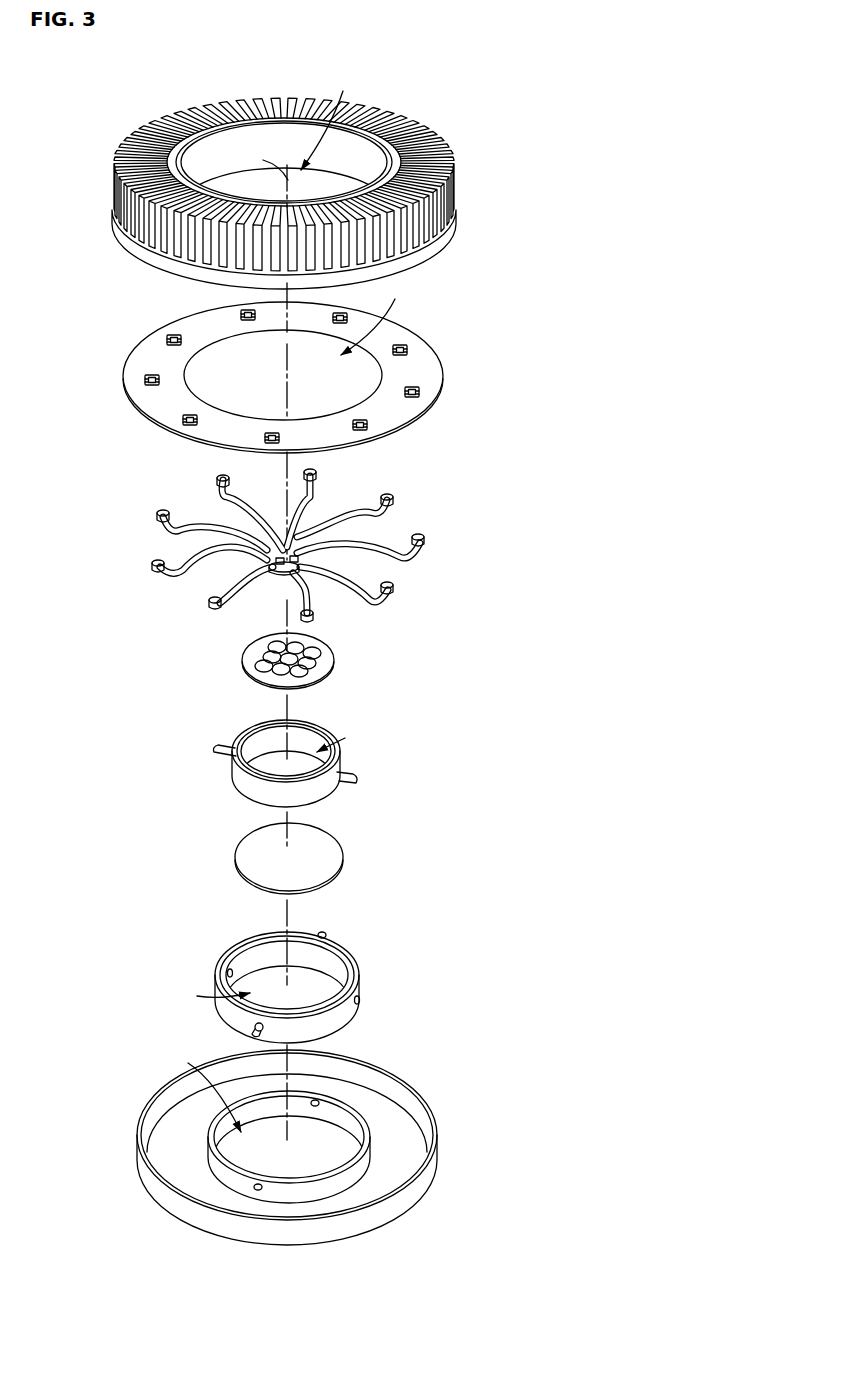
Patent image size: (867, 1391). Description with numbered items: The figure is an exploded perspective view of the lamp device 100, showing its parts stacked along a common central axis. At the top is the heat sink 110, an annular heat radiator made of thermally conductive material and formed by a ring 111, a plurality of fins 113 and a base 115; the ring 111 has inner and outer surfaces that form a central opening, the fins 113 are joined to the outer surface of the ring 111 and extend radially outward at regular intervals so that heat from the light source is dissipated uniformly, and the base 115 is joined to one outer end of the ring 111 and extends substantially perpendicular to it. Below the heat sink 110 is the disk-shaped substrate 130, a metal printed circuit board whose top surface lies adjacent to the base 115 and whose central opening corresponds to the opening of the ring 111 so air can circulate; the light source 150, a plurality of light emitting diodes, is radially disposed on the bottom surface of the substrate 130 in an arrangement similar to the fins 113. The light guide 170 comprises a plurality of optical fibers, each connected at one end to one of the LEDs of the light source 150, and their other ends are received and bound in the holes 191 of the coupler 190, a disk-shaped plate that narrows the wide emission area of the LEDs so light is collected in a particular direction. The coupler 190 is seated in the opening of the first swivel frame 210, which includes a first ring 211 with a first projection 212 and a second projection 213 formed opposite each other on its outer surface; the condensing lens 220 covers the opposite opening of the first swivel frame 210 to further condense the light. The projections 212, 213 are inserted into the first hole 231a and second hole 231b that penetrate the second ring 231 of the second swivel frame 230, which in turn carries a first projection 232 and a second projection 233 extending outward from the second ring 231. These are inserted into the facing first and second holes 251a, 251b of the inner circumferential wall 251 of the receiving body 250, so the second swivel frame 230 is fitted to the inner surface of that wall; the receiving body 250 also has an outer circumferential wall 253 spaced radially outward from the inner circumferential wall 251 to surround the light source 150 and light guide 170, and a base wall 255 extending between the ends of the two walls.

The lamp device 100 is at (73, 93).
The heat sink 110 is at (463, 72).
The ring 111 is at (408, 122).
The fins 113 is at (426, 150).
The base 115 is at (453, 207).
The substrate 130 is at (440, 378).
The light source 150 is at (405, 348).
The light guide 170 is at (397, 520).
The coupler 190 is at (328, 665).
The holes 191 is at (318, 654).
The first swivel frame 210 is at (394, 700).
The first ring 211 is at (341, 745).
The first projection 212 is at (350, 776).
The second projection 213 is at (313, 718).
The condensing lens 220 is at (338, 857).
The second swivel frame 230 is at (404, 905).
The second ring 231 is at (360, 972).
The first hole 231a is at (361, 1002).
The second hole 231b is at (300, 960).
The first projection 232 is at (326, 933).
The second projection 233 is at (268, 1030).
The receiving body 250 is at (488, 1068).
The inner circumferential wall 251 is at (368, 1118).
The first hole 251a is at (263, 1186).
The second hole 251b is at (321, 1102).
The outer circumferential wall 253 is at (408, 1146).
The base wall 255 is at (410, 1160).